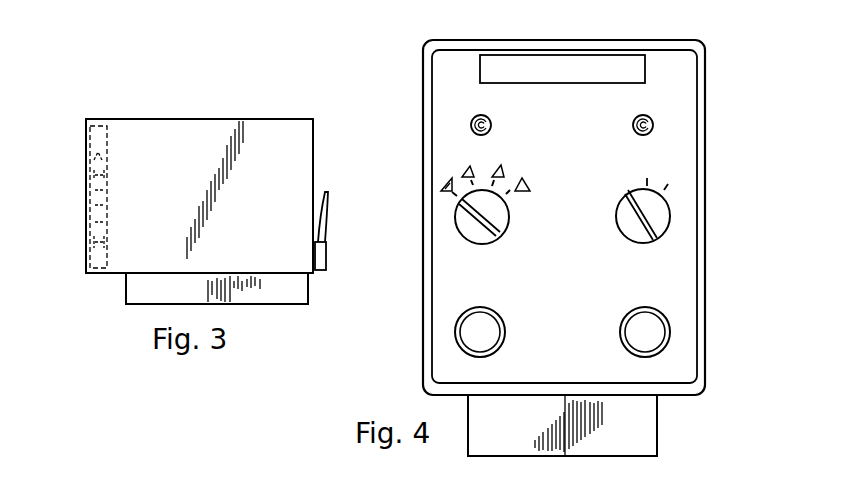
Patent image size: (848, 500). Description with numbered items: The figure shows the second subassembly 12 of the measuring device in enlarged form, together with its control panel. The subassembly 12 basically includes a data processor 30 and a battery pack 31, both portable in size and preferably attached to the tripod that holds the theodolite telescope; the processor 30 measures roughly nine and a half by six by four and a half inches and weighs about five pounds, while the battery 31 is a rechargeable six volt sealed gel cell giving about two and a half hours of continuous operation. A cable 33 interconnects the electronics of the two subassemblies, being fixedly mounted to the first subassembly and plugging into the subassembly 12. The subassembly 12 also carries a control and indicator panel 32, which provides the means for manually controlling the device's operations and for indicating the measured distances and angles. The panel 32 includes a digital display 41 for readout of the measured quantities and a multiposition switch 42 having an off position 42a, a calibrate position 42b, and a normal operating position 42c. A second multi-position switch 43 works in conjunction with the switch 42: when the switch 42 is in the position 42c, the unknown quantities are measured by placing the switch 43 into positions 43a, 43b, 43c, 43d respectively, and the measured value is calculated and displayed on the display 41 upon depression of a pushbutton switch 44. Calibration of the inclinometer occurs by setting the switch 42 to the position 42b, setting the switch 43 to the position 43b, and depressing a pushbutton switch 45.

In FIG. 3, the subassembly 12 is at (141, 111).
In FIG. 3, the data processor 30 is at (193, 130).
In FIG. 4, the data processor 30 is at (547, 40).
In FIG. 3, the battery pack 31 is at (130, 290).
In FIG. 4, the battery pack 31 is at (642, 415).
In FIG. 3, the control and indicator panel 32 is at (98, 220).
In FIG. 4, the control and indicator panel 32 is at (683, 98).
In FIG. 3, the cable 33 is at (328, 204).
In FIG. 4, the digital display 41 is at (608, 62).
In FIG. 4, the multiposition switch 42 is at (662, 220).
In FIG. 4, the off position 42a is at (627, 182).
In FIG. 4, the calibrate position 42b is at (647, 178).
In FIG. 4, the normal operating position 42c is at (665, 186).
In FIG. 4, the multi-position switch 43 is at (465, 225).
In FIG. 4, the switch position 43a is at (450, 187).
In FIG. 4, the switch position 43b is at (527, 182).
In FIG. 4, the switch position 43c is at (462, 172).
In FIG. 4, the switch position 43d is at (502, 168).
In FIG. 4, the pushbutton switch 44 is at (657, 333).
In FIG. 4, the pushbutton switch 45 is at (468, 333).